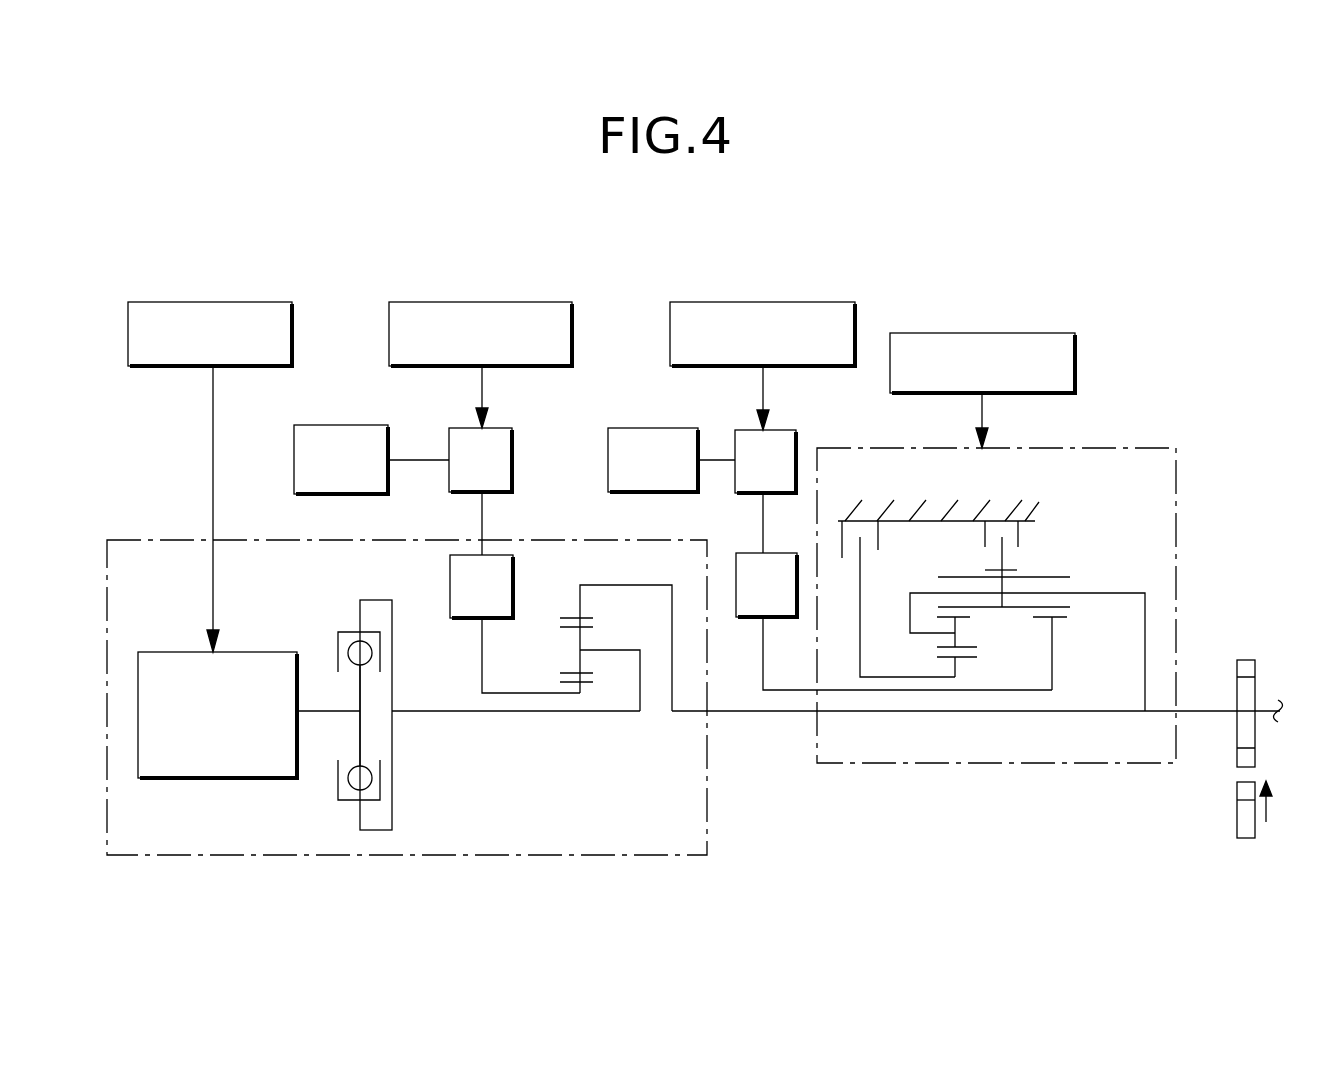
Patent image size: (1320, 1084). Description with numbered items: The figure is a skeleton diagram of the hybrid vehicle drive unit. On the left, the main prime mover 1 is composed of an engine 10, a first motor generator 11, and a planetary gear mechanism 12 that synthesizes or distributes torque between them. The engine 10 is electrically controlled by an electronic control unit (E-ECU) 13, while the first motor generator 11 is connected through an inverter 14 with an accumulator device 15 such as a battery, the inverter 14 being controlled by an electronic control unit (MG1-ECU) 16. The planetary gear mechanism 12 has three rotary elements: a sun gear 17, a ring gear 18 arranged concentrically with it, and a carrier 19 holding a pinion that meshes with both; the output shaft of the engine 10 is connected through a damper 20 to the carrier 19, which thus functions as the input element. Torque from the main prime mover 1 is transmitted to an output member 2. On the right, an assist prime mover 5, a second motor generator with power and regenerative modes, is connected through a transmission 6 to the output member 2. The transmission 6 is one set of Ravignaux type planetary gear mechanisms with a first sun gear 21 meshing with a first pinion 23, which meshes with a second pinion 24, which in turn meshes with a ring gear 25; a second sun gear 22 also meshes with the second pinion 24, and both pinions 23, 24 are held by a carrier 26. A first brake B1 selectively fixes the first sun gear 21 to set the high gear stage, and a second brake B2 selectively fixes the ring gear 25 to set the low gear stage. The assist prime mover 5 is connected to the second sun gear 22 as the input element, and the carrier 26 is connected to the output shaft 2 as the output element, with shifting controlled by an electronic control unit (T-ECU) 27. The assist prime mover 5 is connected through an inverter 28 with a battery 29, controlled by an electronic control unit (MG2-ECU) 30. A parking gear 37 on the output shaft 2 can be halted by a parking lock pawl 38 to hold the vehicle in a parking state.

The main prime mover 1 is at (598, 855).
The output member 2 is at (1205, 713).
The assist prime mover 5 is at (748, 620).
The transmission 6 is at (1176, 452).
The engine 10 is at (257, 780).
The first motor generator 11 is at (450, 580).
The planetary gear mechanism 12 is at (552, 726).
The electronic control unit (E-ECU) 13 is at (270, 302).
The inverter 14 is at (505, 428).
The accumulator device 15 is at (346, 425).
The electronic control unit (MG1-ECU) 16 is at (538, 302).
The sun gear 17 is at (590, 682).
The ring gear 18 is at (562, 618).
The carrier 19 is at (612, 650).
The damper 20 is at (348, 800).
The first sun gear 21 is at (970, 657).
The second sun gear 22 is at (1060, 618).
The first pinion 23 is at (972, 648).
The second pinion 24 is at (944, 577).
The ring gear 25 is at (1016, 572).
The carrier 26 is at (1110, 593).
The electronic control unit (T-ECU) 27 is at (1058, 333).
The inverter 28 is at (788, 430).
The battery 29 is at (653, 428).
The electronic control unit (MG2-ECU) 30 is at (832, 302).
The parking gear 37 is at (1247, 660).
The parking lock pawl 38 is at (1237, 825).
The first brake B1 is at (865, 518).
The second brake B2 is at (1014, 518).